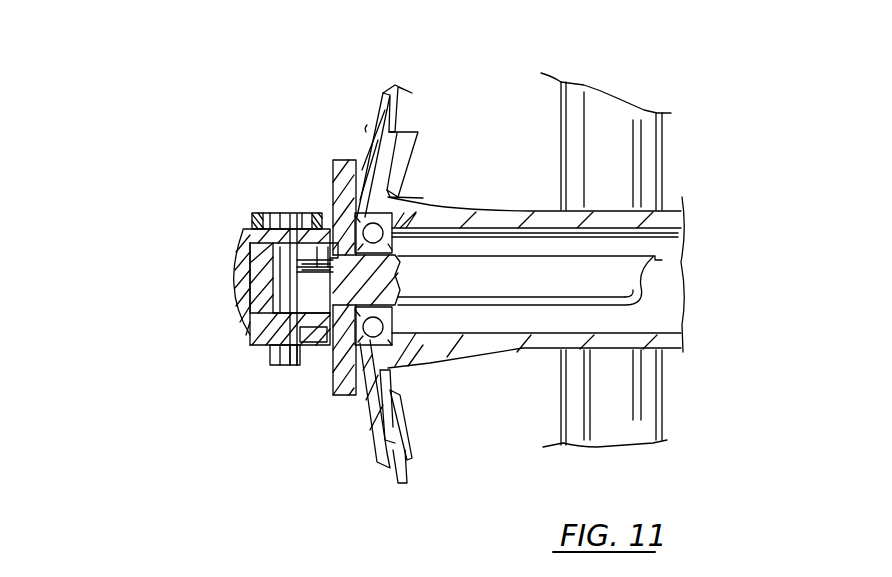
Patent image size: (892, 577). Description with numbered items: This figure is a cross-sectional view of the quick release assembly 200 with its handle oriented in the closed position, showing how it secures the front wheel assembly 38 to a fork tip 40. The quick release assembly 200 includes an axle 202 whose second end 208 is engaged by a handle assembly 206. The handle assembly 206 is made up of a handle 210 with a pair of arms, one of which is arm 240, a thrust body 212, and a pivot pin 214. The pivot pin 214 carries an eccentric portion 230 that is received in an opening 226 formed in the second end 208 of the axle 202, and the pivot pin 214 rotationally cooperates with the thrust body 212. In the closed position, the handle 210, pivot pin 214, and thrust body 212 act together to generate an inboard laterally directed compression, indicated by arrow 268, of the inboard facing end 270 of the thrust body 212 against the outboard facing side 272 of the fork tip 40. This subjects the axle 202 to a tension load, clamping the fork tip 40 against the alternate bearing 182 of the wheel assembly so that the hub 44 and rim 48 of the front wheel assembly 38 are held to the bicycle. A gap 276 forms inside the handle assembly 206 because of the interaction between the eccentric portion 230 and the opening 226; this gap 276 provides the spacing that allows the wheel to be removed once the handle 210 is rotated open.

The front wheel assembly 38 is at (531, 78).
The rim 48 is at (582, 405).
The hub 44 is at (423, 205).
The axle 202 is at (511, 265).
The inboard facing end 270 is at (355, 340).
The fork tip 40 is at (342, 395).
The alternate bearing 182 is at (372, 350).
The pivot pin 214 is at (277, 213).
The gap 276 is at (303, 218).
The arm 240 is at (243, 234).
The eccentric portion 230 is at (245, 282).
The thrust body 212 is at (247, 290).
The handle 210 is at (256, 219).
The second end 208 is at (273, 305).
The opening 226 is at (262, 338).
The outboard facing side 272 is at (340, 322).
The handle assembly 206 is at (243, 197).
The quick release assembly 200 is at (150, 405).
The arrow 268 is at (282, 465).